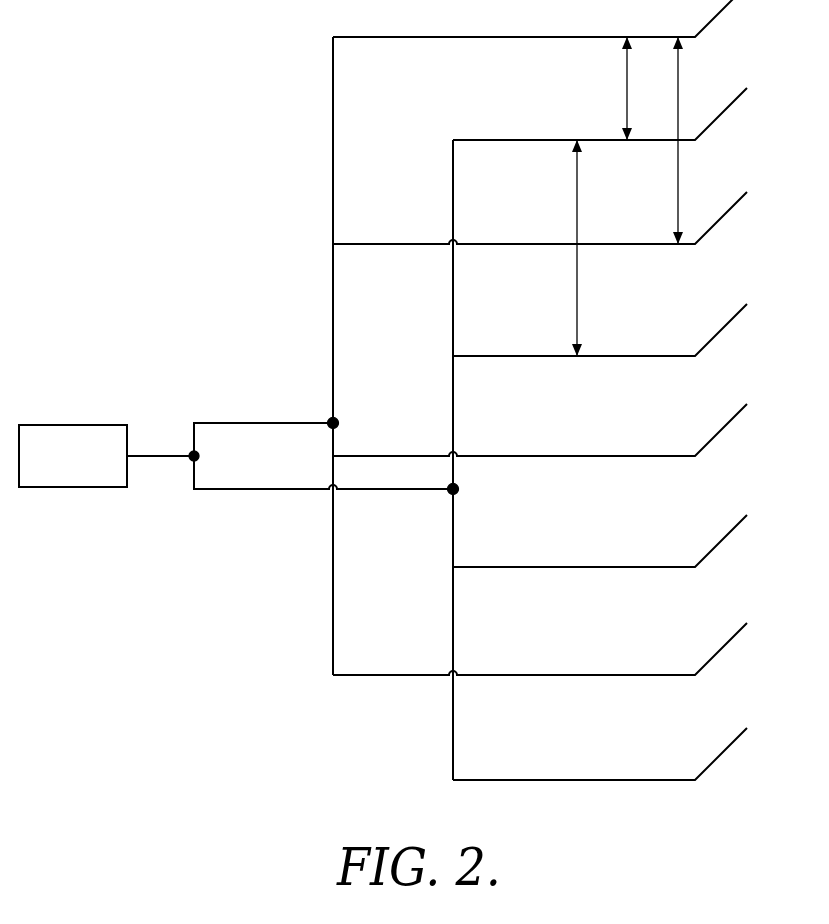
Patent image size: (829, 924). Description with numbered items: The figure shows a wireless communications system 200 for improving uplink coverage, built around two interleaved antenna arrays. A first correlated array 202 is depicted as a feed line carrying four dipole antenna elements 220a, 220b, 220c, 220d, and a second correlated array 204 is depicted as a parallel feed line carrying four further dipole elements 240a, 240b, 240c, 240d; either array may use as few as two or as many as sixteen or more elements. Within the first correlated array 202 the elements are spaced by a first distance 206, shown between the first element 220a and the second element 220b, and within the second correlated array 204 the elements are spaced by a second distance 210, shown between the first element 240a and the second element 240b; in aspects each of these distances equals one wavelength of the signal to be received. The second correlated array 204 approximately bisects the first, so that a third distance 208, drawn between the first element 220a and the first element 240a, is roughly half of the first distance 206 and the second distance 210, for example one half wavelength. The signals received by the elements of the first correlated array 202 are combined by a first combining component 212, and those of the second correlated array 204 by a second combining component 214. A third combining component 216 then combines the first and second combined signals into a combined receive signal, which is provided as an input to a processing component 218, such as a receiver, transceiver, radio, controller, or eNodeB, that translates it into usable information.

The wireless communications system 200 is at (98, 117).
The first correlated array 202 is at (322, 49).
The second correlated array 204 is at (442, 147).
The first distance 206 is at (681, 82).
The third distance 208 is at (624, 82).
The second distance 210 is at (574, 280).
The first combining component 212 is at (329, 419).
The second combining component 214 is at (451, 492).
The third combining component 216 is at (190, 459).
The processing component 218 is at (88, 423).
The first element of the first correlated array 220a is at (729, 4).
The second element of the first correlated array 220b is at (729, 210).
The third element of the first correlated array 220c is at (729, 422).
The fourth element of the first correlated array 220d is at (729, 641).
The first element of the second correlated array 240a is at (729, 106).
The second element of the second correlated array 240b is at (729, 322).
The third element of the second correlated array 240c is at (729, 533).
The fourth element of the second correlated array 240d is at (729, 746).